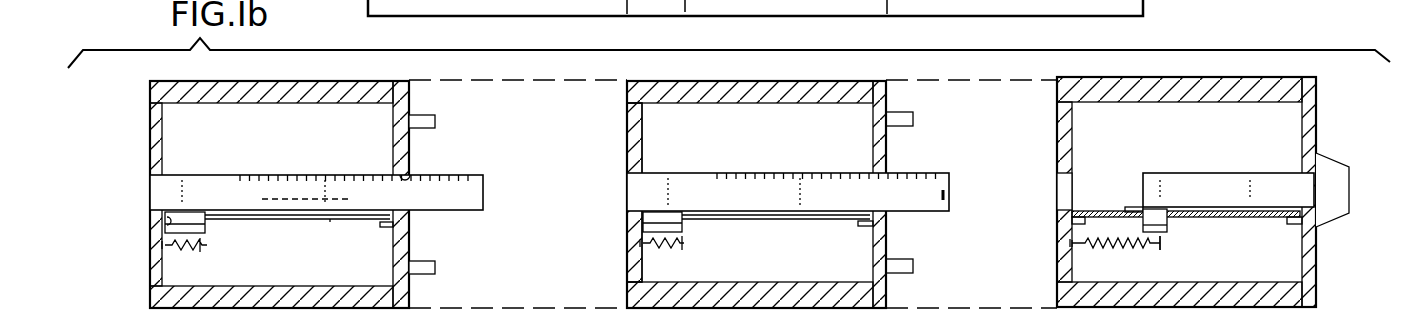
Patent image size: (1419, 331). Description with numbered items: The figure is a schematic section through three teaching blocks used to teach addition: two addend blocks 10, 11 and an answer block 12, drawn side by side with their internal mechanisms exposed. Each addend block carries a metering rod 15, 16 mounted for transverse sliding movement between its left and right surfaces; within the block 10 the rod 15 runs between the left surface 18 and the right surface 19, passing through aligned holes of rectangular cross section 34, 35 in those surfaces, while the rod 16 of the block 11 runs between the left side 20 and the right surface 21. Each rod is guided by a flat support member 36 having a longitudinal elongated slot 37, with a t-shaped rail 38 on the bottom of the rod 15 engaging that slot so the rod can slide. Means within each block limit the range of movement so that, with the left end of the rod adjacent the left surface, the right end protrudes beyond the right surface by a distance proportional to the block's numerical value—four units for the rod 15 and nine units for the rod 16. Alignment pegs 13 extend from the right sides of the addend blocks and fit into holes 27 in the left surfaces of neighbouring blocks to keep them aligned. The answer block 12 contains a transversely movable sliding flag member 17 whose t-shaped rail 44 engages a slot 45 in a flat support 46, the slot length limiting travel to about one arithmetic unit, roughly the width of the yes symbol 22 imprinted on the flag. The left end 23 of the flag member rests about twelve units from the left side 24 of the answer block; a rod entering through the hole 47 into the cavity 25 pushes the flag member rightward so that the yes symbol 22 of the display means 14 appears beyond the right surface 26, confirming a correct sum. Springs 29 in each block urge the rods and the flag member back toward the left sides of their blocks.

The addend block 10 is at (160, 88).
The addend block 11 is at (630, 93).
The answer block 12 is at (1316, 82).
The alignment pegs 13 is at (437, 120).
The display means 14 is at (1352, 175).
The metering rod 15 is at (285, 202).
The metering rod 16 is at (757, 200).
The sliding flag member 17 is at (1230, 195).
The left surface 18 is at (152, 292).
The right surface 19 is at (410, 232).
The left side 20 is at (628, 232).
The right surface 21 is at (886, 250).
The yes symbol 22 is at (1289, 175).
The left end 23 is at (1143, 185).
The left side 24 is at (1070, 244).
The cavity 25 is at (1090, 185).
The right surface 26 is at (1318, 265).
The holes 27 is at (155, 117).
The springs 29 is at (183, 248).
The hole of rectangular cross section 34 is at (155, 183).
The hole of rectangular cross section 35 is at (410, 180).
The flat support member 36 is at (335, 219).
The longitudinal elongated slot 37 is at (371, 219).
The rail 38 is at (165, 222).
The t-shaped rail 44 is at (1168, 232).
The slot 45 is at (1192, 211).
The flat support 46 is at (1128, 211).
The hole 47 is at (1072, 213).